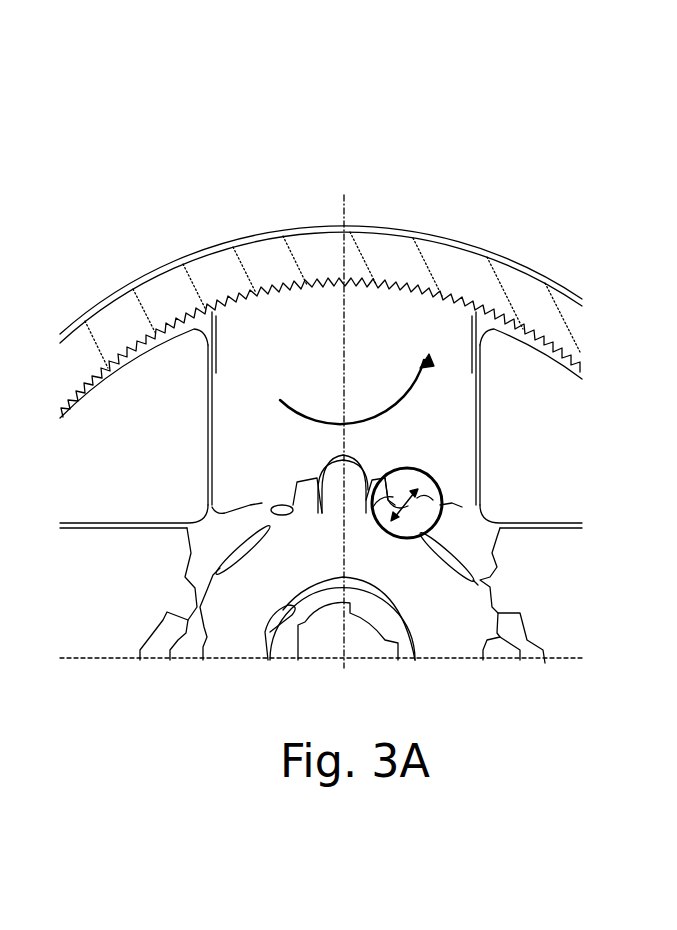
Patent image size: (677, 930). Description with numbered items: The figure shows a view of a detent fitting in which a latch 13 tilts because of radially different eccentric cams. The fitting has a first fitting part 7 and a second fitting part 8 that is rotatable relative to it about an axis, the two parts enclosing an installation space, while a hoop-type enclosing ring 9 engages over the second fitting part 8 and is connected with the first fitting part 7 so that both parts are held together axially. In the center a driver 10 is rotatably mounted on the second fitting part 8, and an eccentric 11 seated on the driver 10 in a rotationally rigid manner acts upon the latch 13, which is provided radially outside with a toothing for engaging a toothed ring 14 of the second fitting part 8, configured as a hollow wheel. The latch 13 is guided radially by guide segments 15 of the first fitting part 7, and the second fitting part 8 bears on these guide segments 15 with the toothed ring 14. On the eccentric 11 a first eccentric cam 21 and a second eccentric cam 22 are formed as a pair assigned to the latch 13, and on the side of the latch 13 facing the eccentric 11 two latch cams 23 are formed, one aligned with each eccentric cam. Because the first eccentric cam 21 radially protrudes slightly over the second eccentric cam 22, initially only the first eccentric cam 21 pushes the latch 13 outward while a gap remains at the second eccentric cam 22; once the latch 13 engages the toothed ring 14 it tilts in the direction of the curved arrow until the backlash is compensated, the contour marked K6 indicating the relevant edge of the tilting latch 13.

The first fitting part 7 is at (192, 315).
The second fitting part 8 is at (155, 283).
The enclosing ring 9 is at (178, 260).
The driver 10 is at (390, 627).
The eccentric 11 is at (250, 590).
The latch 13 is at (308, 330).
The toothed ring 14 is at (483, 307).
The guide segment 15 is at (520, 403).
The first eccentric cam 21 is at (400, 518).
The second eccentric cam 22 is at (273, 520).
The latch cam 23 is at (285, 495).
The contour K6 is at (355, 280).